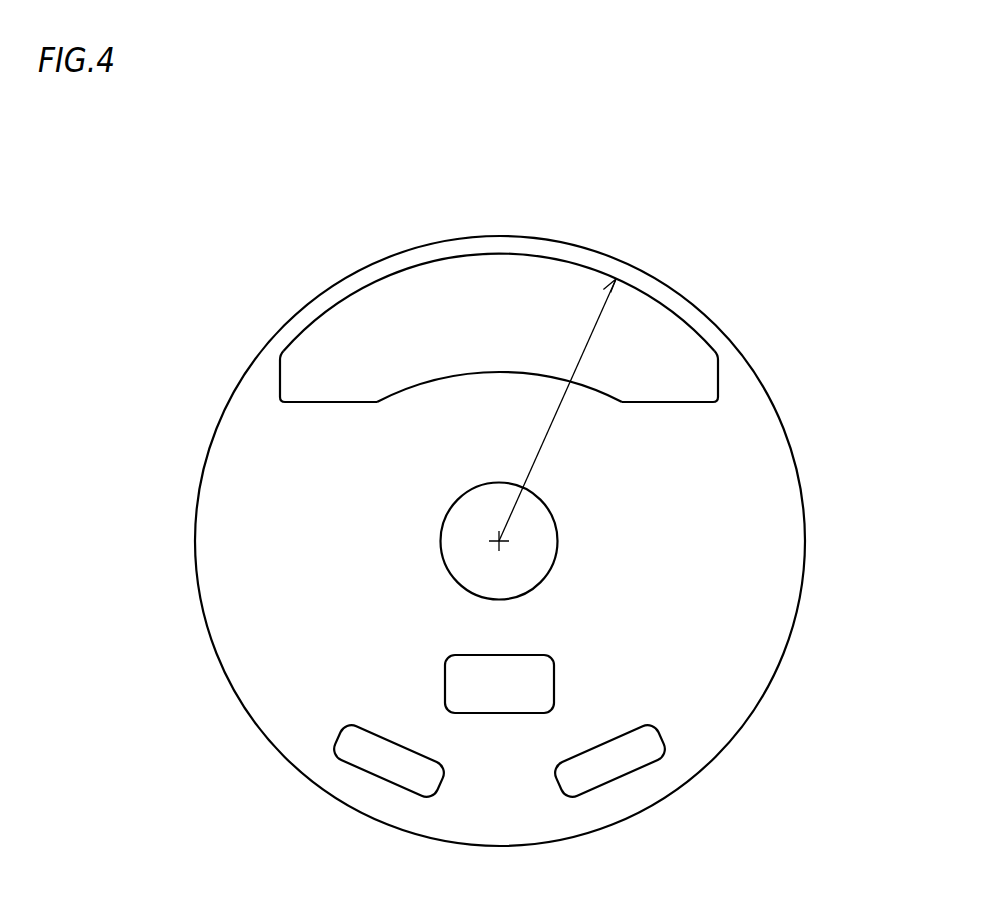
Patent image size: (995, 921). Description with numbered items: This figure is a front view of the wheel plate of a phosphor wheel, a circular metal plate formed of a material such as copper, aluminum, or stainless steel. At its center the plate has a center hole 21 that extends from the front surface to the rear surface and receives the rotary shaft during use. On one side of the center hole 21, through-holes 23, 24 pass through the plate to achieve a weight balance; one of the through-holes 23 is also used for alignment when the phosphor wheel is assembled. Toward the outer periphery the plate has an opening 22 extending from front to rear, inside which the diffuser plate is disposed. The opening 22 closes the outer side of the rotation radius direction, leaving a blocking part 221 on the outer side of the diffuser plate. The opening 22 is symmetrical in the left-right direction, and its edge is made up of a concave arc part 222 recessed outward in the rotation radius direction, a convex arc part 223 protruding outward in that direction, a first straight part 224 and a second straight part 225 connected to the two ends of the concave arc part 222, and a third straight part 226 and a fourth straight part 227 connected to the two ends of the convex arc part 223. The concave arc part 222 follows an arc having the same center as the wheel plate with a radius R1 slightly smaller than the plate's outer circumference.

The center hole 21 is at (465, 542).
The opening 22 is at (855, 173).
The blocking part 221 is at (478, 247).
The concave arc part 222 is at (652, 297).
The convex arc part 223 is at (505, 372).
The first straight part 224 is at (281, 383).
The second straight part 225 is at (718, 390).
The third straight part 226 is at (342, 401).
The fourth straight part 227 is at (650, 400).
The through-hole 23 is at (484, 692).
The through-holes 24 is at (383, 763).
The radius R1 is at (548, 432).